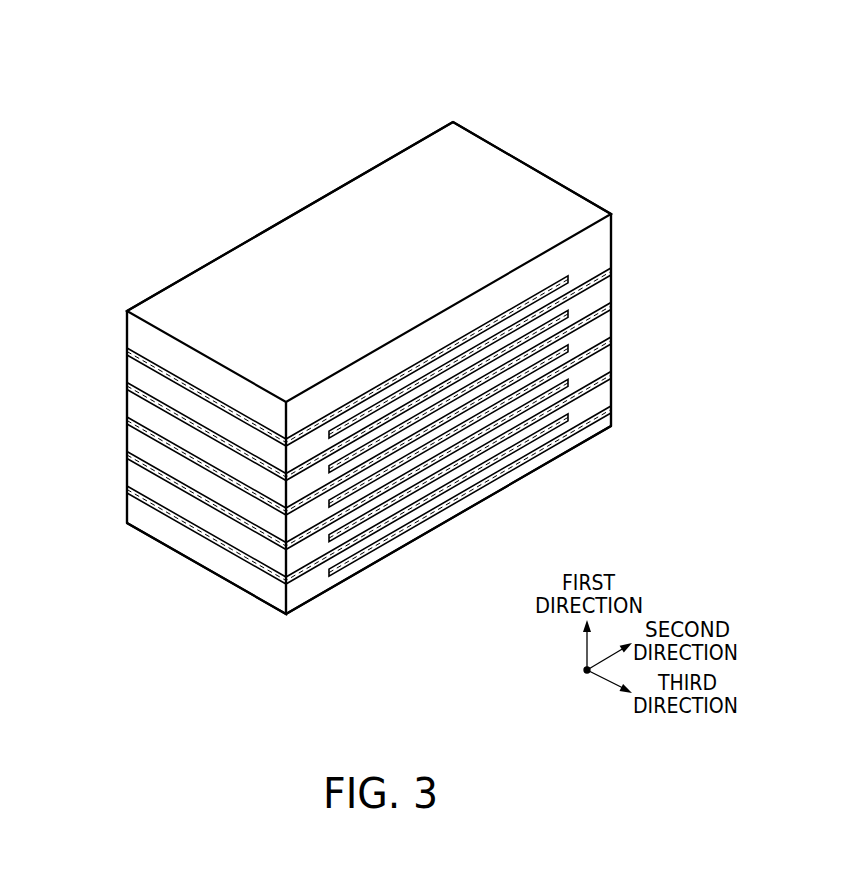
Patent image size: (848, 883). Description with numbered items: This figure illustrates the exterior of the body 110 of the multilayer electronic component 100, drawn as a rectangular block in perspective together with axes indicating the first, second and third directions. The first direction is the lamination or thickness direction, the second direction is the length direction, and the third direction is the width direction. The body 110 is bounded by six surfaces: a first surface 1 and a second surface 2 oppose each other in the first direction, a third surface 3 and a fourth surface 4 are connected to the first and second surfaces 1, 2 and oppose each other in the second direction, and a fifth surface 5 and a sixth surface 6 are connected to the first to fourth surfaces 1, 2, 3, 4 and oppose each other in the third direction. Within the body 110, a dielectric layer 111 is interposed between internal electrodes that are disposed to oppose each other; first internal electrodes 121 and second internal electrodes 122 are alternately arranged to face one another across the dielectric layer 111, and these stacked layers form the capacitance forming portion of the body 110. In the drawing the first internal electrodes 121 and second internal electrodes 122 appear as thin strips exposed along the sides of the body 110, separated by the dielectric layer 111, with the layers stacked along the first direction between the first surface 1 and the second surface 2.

The multilayer electronic component 100 is at (126, 38).
The body 110 is at (345, 222).
The dielectric layer 111 is at (155, 448).
The first internal electrode 121 is at (150, 402).
The second internal electrode 122 is at (600, 318).
The first surface 1 is at (410, 533).
The second surface 2 is at (412, 185).
The third surface 3 is at (177, 530).
The fourth surface 4 is at (522, 198).
The fifth surface 5 is at (205, 294).
The sixth surface 6 is at (580, 403).